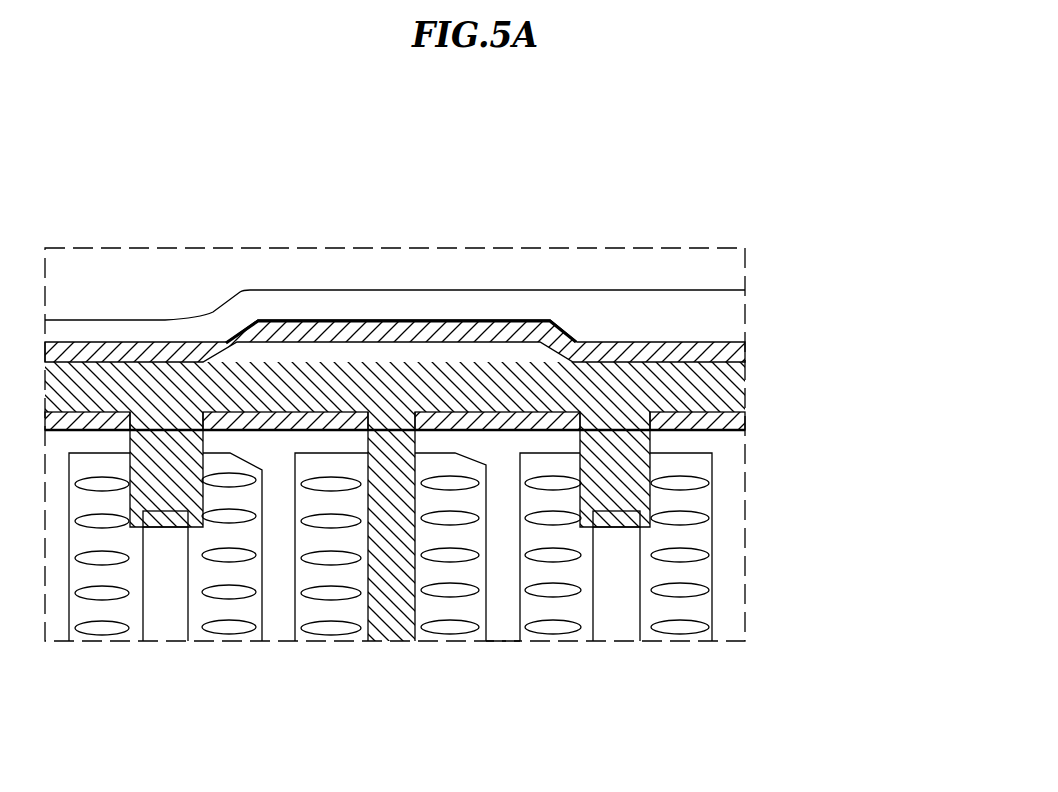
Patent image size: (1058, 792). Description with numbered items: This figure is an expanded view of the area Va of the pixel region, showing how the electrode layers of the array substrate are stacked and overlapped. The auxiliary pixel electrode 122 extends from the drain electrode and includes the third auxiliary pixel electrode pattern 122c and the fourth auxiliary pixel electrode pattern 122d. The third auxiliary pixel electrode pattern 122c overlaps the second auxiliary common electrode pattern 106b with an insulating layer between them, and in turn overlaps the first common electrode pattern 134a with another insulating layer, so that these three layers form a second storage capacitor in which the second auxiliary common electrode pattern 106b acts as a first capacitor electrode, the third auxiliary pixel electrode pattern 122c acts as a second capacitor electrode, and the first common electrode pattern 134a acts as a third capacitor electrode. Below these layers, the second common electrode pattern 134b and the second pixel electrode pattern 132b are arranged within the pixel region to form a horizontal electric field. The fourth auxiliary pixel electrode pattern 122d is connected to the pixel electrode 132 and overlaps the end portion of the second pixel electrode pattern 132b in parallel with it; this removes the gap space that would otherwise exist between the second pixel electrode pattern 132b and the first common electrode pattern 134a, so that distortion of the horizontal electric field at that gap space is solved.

The area Va is at (722, 248).
The auxiliary pixel electrode 122 is at (317, 326).
The third auxiliary pixel electrode pattern 122c is at (745, 382).
The fourth auxiliary pixel electrode pattern 122d is at (655, 462).
The first common electrode pattern 134a is at (602, 308).
The second common electrode pattern 134b is at (500, 641).
The second auxiliary common electrode pattern 106b is at (665, 340).
The second pixel electrode pattern 132b is at (640, 576).
The pixel electrode 132 is at (482, 547).